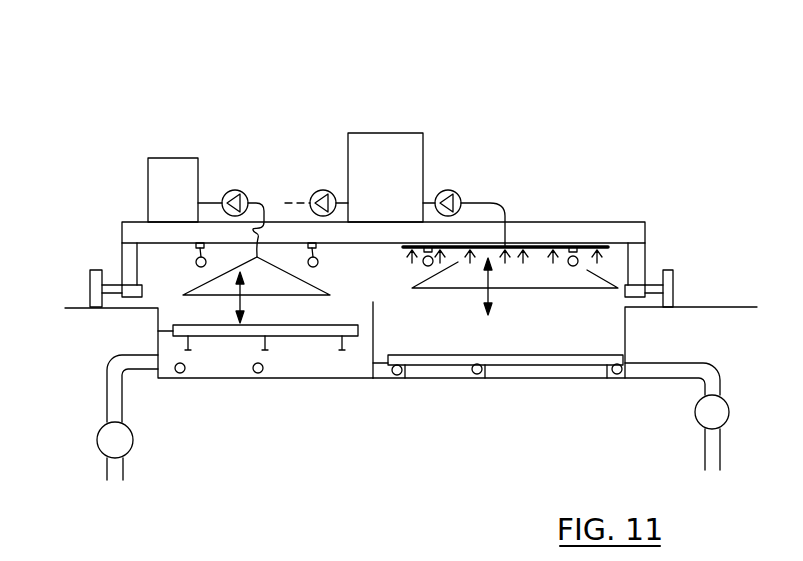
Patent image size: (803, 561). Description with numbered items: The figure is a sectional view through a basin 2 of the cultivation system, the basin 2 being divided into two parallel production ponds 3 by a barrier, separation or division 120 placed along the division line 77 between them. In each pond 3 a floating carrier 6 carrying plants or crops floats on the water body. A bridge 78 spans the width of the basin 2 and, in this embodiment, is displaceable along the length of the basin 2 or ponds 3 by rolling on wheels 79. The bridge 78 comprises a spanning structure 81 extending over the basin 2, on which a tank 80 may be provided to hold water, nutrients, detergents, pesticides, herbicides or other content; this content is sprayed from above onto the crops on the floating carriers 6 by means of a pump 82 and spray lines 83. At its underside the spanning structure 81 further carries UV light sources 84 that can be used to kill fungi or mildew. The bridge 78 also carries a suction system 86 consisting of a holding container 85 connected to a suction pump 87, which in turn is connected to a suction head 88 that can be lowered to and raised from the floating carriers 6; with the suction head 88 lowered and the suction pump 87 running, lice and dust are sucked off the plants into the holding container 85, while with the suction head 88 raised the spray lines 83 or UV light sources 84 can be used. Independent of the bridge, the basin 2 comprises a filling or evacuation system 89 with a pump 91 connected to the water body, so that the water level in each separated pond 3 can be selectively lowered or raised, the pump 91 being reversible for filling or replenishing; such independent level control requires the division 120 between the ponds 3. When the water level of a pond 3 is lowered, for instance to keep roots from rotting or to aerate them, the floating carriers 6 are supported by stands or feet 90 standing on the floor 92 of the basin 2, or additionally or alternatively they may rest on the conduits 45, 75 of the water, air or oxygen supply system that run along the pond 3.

The basin 2 is at (380, 380).
The production pond 3 is at (630, 328).
The floating carrier 6 is at (192, 325).
The circulation conduit 45 is at (182, 376).
The conduit 75 is at (264, 370).
The division line 77 is at (363, 326).
The bridge 78 is at (673, 175).
The wheel 79 is at (90, 287).
The tank 80 is at (388, 138).
The spanning structure 81 is at (590, 223).
The pump 82 is at (323, 189).
The spray line 83 is at (543, 246).
The UV light source 84 is at (196, 263).
The holding container 85 is at (173, 167).
The suction system 86 is at (222, 120).
The suction pump 87 is at (233, 189).
The suction head 88 is at (260, 288).
The filling or evacuation system 89 is at (153, 500).
The feet 90 is at (190, 349).
The pump 91 is at (97, 434).
The floor 92 is at (420, 382).
The barrier, separation or division 120 is at (357, 380).